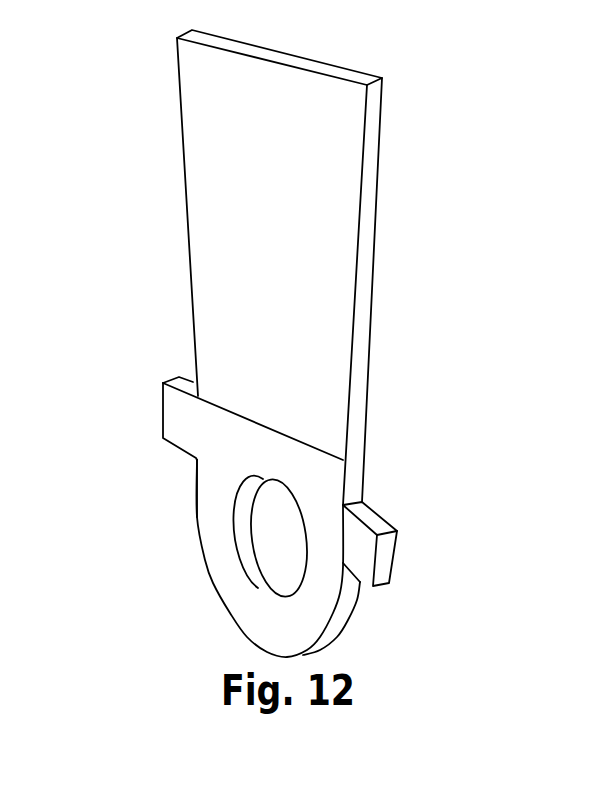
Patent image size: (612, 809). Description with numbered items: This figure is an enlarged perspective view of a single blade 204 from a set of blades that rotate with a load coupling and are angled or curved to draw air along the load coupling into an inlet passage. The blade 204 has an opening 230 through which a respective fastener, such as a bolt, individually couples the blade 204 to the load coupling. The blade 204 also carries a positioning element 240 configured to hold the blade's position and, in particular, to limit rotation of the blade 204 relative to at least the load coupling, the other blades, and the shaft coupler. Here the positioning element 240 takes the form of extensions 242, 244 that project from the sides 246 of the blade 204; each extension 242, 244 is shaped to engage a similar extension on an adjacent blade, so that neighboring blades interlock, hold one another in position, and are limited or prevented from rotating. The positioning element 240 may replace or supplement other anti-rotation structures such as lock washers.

The blade 204 is at (303, 270).
The opening 230 is at (260, 577).
The positioning element 240 is at (278, 454).
The extension 242 is at (372, 520).
The extension 244 is at (179, 382).
The sides 246 is at (197, 473).